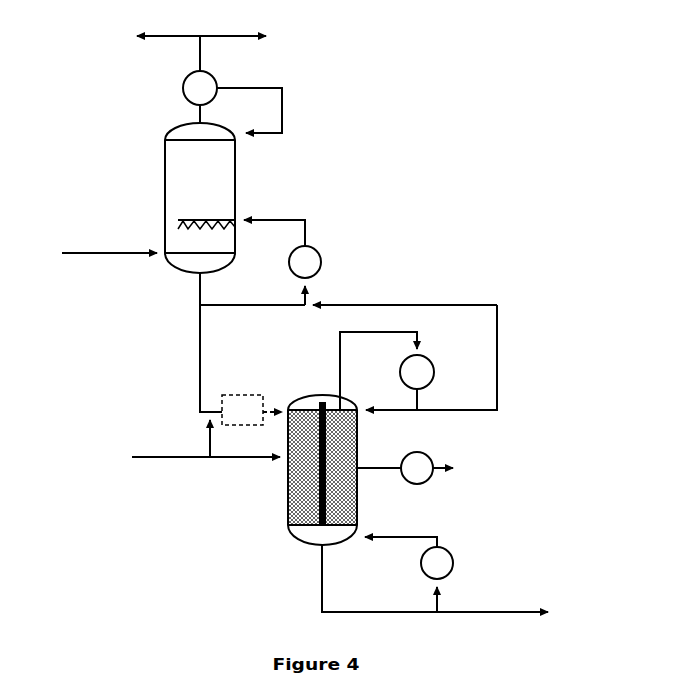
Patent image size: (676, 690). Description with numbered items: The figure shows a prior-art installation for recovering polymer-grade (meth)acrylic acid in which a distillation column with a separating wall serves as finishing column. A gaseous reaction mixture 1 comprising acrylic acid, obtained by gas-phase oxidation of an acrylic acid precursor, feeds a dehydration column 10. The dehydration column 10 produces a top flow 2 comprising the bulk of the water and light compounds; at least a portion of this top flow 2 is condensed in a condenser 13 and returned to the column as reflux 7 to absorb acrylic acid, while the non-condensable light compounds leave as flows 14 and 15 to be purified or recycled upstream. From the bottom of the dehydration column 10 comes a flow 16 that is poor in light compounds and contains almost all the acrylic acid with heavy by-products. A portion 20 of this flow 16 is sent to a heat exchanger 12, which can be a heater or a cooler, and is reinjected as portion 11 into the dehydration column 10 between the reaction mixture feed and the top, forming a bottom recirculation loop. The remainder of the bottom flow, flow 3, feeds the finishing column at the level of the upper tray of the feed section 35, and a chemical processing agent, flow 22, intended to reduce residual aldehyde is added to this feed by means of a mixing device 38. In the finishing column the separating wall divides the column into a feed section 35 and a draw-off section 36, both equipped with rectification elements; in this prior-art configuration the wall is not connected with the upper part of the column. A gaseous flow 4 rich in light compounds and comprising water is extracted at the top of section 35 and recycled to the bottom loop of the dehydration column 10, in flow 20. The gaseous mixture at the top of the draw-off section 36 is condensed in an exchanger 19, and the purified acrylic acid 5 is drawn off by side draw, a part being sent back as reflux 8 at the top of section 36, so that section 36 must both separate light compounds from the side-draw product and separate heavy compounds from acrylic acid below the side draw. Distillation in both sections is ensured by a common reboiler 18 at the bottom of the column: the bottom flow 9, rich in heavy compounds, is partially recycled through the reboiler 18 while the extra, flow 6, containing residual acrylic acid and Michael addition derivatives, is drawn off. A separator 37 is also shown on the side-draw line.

The flow of light compounds 14 is at (168, 24).
The flow of light compounds 15 is at (233, 41).
The condenser 13 is at (200, 88).
The top flow 2 is at (190, 112).
The reflux 7 is at (262, 110).
The dehydration column 10 is at (200, 198).
The gaseous reaction mixture 1 is at (109, 239).
The portion of the bottom loop 11 is at (287, 233).
The heat exchanger 12 is at (305, 275).
The flow from the bottom 16 is at (181, 290).
The portion of the liquid flow 20 is at (252, 293).
The gaseous flow rich in light compounds 4 is at (405, 346).
The exchanger 19 is at (387, 371).
The flow 3 is at (196, 358).
The mixing device 38 is at (252, 410).
The flow of chemical processing agent 22 is at (190, 442).
The reflux 8 is at (322, 457).
The feed section 35 is at (304, 467).
The draw-off section 36 is at (341, 467).
The flow of purified acrylic acid 5 is at (379, 455).
The separator 37 is at (427, 468).
The flow from the bottom 9 is at (369, 578).
The reboiler 18 is at (409, 574).
The drawn off flow 6 is at (492, 600).